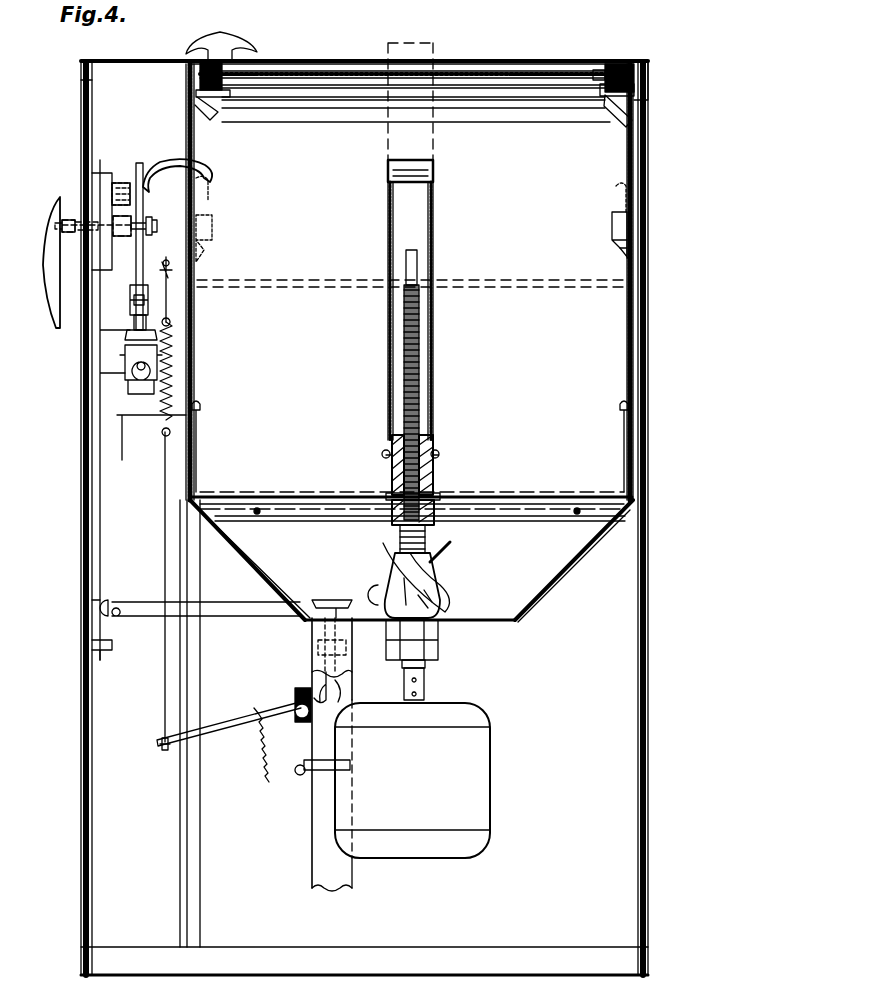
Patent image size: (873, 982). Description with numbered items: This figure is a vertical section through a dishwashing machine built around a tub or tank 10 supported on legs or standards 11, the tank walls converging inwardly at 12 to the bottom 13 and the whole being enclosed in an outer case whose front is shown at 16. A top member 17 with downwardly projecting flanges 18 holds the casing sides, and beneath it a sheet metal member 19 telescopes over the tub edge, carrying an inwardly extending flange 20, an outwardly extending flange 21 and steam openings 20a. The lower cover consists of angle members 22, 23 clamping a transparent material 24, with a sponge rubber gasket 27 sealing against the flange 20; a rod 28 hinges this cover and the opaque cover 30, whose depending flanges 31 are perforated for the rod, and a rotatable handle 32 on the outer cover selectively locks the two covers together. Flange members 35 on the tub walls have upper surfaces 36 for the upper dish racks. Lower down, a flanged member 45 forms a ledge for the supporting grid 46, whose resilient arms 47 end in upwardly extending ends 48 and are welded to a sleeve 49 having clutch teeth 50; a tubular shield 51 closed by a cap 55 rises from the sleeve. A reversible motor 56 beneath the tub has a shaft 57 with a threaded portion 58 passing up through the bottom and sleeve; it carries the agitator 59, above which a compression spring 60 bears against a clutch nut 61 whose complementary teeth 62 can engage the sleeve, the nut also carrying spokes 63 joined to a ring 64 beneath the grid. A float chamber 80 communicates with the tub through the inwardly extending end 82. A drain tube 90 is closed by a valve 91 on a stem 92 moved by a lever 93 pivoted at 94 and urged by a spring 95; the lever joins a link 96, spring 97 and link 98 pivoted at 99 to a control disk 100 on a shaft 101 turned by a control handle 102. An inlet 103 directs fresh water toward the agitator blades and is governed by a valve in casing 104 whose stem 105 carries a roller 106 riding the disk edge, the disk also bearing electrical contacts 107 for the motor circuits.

The tub or tank 10 is at (628, 338).
The legs or standards 11 is at (625, 605).
The converging wall portion 12 is at (592, 548).
The bottom 13 is at (506, 622).
The front of outer case 16 is at (84, 578).
The top member 17 is at (152, 61).
The downwardly projecting flanges 18 is at (81, 78).
The sheet metal member 19 is at (638, 64).
The inwardly extending flange 20 is at (635, 115).
The openings 20a is at (638, 104).
The outwardly extending flange 21 is at (614, 122).
The flanged or angle member 22 is at (547, 98).
The flanged or angle member 23 is at (597, 88).
The transparent material 24 is at (512, 88).
The gasket 27 is at (600, 110).
The rod 28 is at (616, 64).
The opaque cover 30 is at (490, 62).
The downwardly depending flanges 31 is at (195, 80).
The rotatable handle 32 is at (243, 42).
The flange members 35 is at (620, 248).
The upper surfaces 36 is at (611, 224).
The flanged member 45 is at (208, 500).
The supporting grid 46 is at (314, 490).
The arms 47 is at (346, 497).
The upwardly extending ends 48 is at (197, 448).
The sleeve 49 is at (393, 444).
The clutch teeth 50 is at (396, 490).
The tubular shield 51 is at (433, 405).
The cap 55 is at (392, 162).
The reversible motor 56 is at (472, 754).
The shaft 57 is at (413, 262).
The threaded portion 58 is at (420, 332).
The agitator 59 is at (440, 555).
The compression spring 60 is at (426, 534).
The clutch nut 61 is at (395, 515).
The complementary teeth 62 is at (440, 497).
The spokes 63 is at (306, 514).
The ring 64 is at (258, 514).
The float chamber 80 is at (106, 492).
The inwardly extending end 82 is at (220, 606).
The drain tube 90 is at (320, 840).
The valve 91 is at (336, 602).
The stem 92 is at (340, 684).
The lever 93 is at (223, 722).
The pivot 94 is at (297, 704).
The spring 95 is at (290, 745).
The link 96 is at (164, 708).
The spring 97 is at (172, 366).
The link 98 is at (150, 312).
The pivot 99 is at (172, 276).
The control disk 100 is at (165, 250).
The shaft 101 is at (158, 228).
The control handle 102 is at (50, 268).
The inlet 103 is at (207, 168).
The valve casing 104 is at (108, 377).
The valve stem 105 is at (148, 322).
The roller 106 is at (146, 298).
The electrical contacts 107 is at (124, 182).